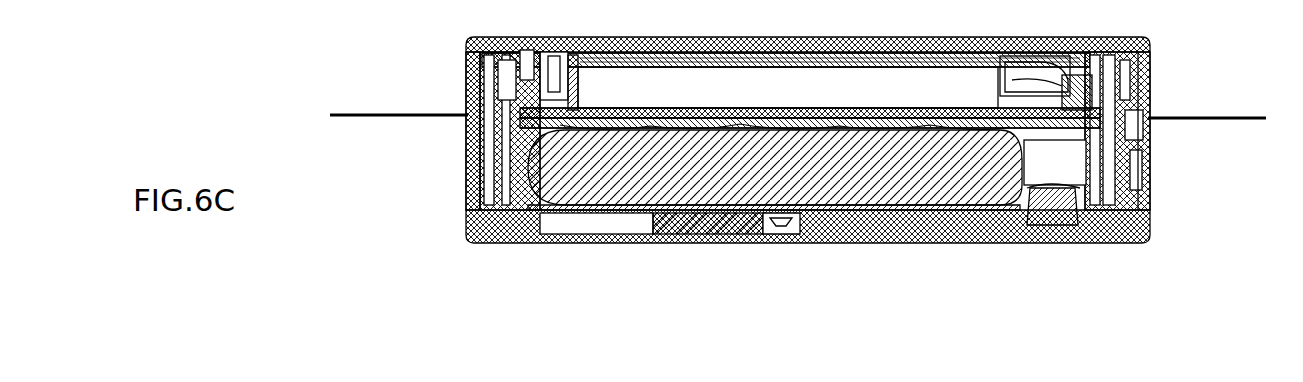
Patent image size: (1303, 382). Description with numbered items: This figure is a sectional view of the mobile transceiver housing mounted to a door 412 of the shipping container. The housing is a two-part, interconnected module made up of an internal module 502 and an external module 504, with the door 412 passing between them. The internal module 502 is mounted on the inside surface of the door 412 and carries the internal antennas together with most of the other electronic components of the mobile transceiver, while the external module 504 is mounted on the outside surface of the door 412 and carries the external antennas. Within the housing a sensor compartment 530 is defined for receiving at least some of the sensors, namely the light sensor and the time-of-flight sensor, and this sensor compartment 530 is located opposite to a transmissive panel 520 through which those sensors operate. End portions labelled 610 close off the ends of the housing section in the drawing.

The door 412 is at (1217, 120).
The internal module 502 is at (778, 246).
The external module 504 is at (833, 36).
The transmissive panel 520 is at (1060, 245).
The sensor compartment 530 is at (1023, 245).
The end cap 610 is at (498, 245).